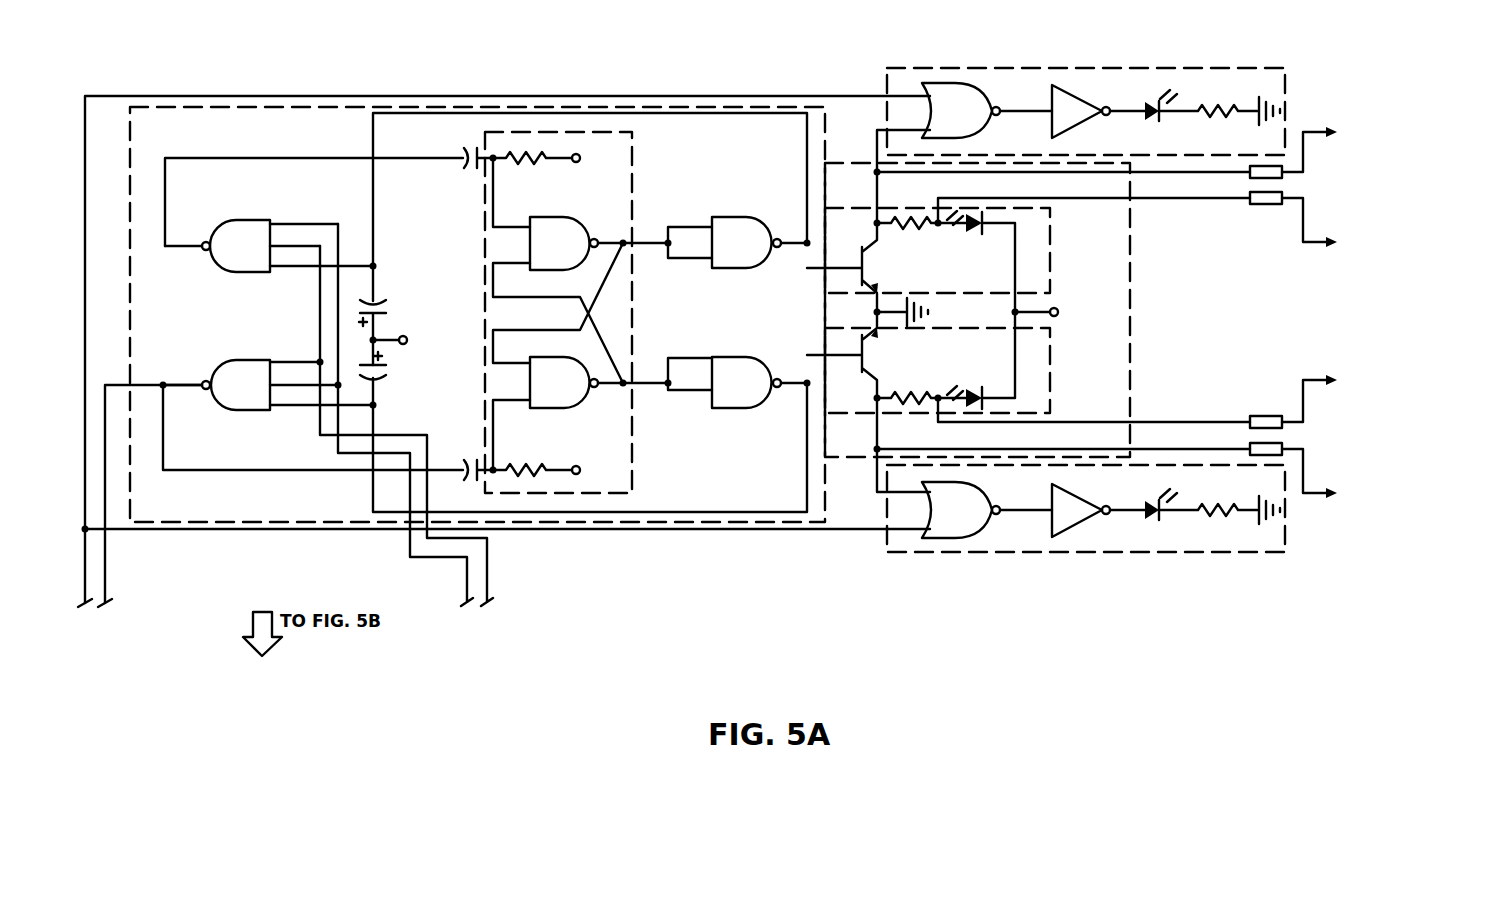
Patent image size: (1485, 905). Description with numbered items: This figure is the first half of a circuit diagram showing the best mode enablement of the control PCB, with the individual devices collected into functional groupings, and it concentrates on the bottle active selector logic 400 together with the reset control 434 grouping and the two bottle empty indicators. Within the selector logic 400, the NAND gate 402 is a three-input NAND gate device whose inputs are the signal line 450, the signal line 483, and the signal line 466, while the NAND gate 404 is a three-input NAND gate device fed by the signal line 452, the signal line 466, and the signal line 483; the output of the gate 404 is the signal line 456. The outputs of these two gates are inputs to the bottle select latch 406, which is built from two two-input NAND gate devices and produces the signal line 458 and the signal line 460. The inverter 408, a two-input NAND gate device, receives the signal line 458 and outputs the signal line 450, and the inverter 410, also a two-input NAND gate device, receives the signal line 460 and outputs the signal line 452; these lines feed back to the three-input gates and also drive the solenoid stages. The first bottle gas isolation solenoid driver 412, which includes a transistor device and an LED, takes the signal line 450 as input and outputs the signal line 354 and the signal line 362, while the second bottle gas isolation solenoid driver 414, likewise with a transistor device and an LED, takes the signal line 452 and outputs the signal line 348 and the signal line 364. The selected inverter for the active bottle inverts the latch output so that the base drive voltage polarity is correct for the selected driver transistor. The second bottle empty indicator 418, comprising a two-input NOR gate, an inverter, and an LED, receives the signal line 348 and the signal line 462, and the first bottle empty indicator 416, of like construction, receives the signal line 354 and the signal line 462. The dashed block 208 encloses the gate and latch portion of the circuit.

The oscillator and latch circuit block 208 is at (107, 495).
The signal line 348 is at (872, 140).
The signal line 354 is at (875, 477).
The signal line 362 is at (1145, 420).
The signal line 364 is at (1147, 201).
The bottle active selector logic 400 is at (1133, 287).
The NAND gate 402 is at (230, 409).
The NAND gate 404 is at (243, 219).
The bottle select latch 406 is at (638, 180).
The inverter 408 is at (747, 356).
The inverter 410 is at (745, 216).
The bottle 1 gas isolation solenoid driver 412 is at (1052, 394).
The bottle 2 gas isolation solenoid driver 414 is at (1052, 276).
The bottle #1 empty indicator 416 is at (1068, 553).
The bottle #2 empty indicator 418 is at (1217, 68).
The reset control 434 is at (268, 472).
The signal line 450 is at (302, 409).
The signal line 452 is at (308, 270).
The signal line 456 is at (241, 157).
The signal line 458 is at (638, 372).
The signal line 460 is at (646, 250).
The signal line 462 is at (87, 337).
The signal line 466 is at (320, 347).
The signal line 483 is at (338, 320).